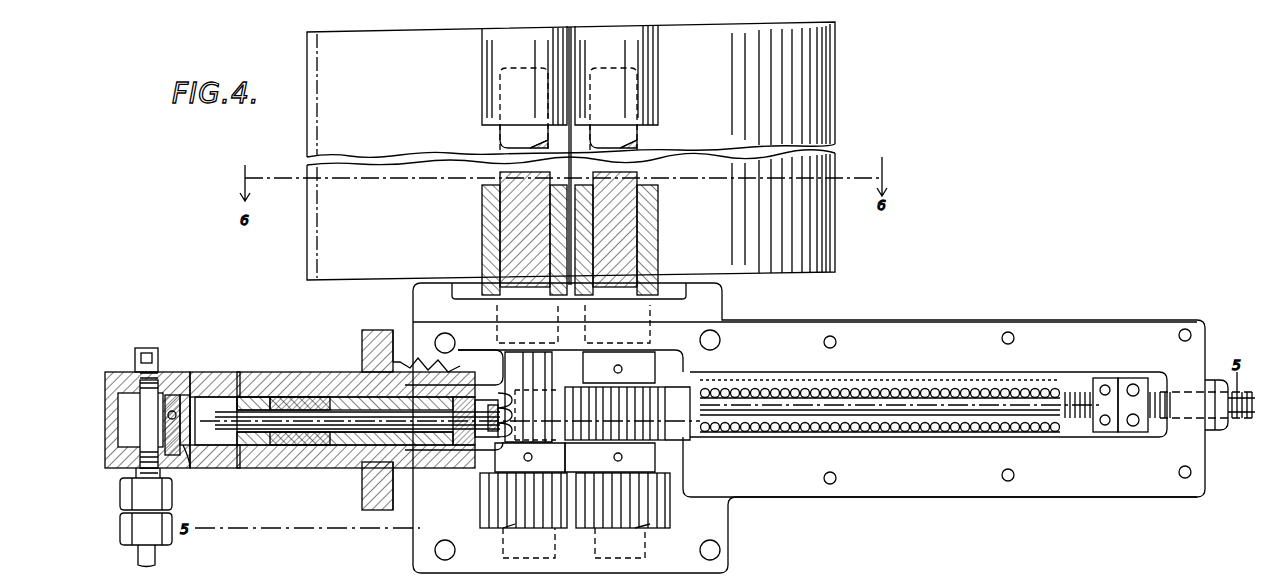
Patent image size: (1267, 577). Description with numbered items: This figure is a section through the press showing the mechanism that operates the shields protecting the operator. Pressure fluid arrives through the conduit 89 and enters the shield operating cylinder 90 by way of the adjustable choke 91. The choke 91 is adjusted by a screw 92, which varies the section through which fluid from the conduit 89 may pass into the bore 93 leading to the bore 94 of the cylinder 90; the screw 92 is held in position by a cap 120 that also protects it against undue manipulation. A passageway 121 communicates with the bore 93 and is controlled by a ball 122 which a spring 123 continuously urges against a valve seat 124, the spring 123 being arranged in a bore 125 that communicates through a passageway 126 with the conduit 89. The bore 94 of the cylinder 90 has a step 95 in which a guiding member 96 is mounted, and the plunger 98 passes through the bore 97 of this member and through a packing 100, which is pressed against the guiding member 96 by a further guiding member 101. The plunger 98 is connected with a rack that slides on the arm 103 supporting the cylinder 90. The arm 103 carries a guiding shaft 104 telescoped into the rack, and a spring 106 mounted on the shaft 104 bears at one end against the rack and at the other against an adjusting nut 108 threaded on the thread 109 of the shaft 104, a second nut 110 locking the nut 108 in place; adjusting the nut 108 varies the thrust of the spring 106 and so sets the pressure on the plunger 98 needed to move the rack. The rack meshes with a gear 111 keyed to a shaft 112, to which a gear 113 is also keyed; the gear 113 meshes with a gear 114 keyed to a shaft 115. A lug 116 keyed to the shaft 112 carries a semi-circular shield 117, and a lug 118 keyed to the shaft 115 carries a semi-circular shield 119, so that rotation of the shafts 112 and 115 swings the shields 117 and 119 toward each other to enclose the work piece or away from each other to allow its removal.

The conduit 89 is at (157, 557).
The shield operating cylinder 90 is at (260, 440).
The adjustable choke 91 is at (145, 413).
The screw 92 is at (135, 360).
The bore 93 is at (128, 393).
The bore 94 is at (247, 405).
The step 95 is at (280, 395).
The guiding member 96 is at (275, 445).
The bore 97 is at (256, 400).
The plunger 98 is at (222, 404).
The packing 100 is at (300, 390).
The guiding member 101 is at (471, 405).
The arm 103 is at (1055, 480).
The guiding shaft 104 is at (927, 398).
The spring 106 is at (978, 395).
The adjusting nut 108 is at (1115, 433).
The thread 109 is at (1165, 392).
The second nut 110 is at (1143, 433).
The gear 111 is at (652, 432).
The shaft 112 is at (642, 528).
The gear 113 is at (650, 496).
The gear 114 is at (505, 498).
The shaft 115 is at (508, 526).
The lug 116 is at (658, 244).
The semi-circular shield 117 is at (308, 228).
The lug 118 is at (482, 236).
The semi-circular shield 119 is at (835, 97).
The cap 120 is at (190, 349).
The passageway 121 is at (190, 395).
The ball 122 is at (205, 395).
The spring 123 is at (186, 450).
The valve seat 124 is at (175, 398).
The bore 125 is at (190, 468).
The passageway 126 is at (163, 440).